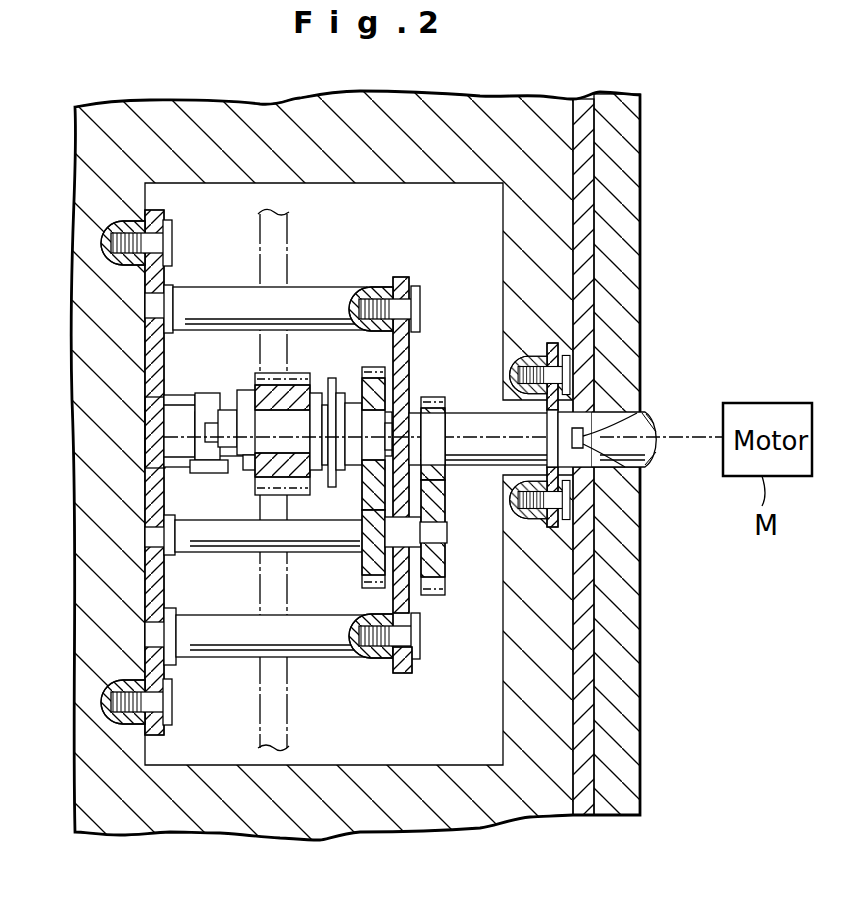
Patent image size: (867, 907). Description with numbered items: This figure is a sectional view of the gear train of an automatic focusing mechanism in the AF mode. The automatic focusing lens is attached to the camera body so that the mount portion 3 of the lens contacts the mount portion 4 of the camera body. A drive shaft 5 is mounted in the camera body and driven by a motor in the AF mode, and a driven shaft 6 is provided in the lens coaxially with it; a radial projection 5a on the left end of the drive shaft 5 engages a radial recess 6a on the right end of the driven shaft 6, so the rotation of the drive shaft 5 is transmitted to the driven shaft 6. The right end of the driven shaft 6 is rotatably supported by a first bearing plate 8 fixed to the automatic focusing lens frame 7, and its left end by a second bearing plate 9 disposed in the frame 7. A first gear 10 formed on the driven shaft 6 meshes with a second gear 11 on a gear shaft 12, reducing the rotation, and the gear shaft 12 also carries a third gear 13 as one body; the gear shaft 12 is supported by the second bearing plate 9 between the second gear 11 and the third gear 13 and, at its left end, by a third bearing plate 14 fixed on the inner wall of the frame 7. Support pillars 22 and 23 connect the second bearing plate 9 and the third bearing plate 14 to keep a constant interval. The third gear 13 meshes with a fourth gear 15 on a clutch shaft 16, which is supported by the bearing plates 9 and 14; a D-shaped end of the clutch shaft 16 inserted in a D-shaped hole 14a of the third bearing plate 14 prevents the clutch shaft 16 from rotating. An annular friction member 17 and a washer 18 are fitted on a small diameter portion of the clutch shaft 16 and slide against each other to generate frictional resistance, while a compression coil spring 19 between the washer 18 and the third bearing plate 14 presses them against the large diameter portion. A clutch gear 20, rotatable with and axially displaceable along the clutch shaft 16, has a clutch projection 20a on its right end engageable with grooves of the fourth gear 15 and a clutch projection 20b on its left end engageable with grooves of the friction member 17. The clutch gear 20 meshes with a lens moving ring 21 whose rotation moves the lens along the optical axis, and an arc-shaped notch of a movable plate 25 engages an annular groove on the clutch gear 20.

The mount portion 3 is at (587, 807).
The mount portion 4 is at (624, 768).
The drive shaft 5 is at (650, 465).
The projection 5a is at (585, 440).
The driven shaft 6 is at (476, 426).
The recess 6a is at (594, 468).
The automatic focusing lens frame 7 is at (532, 805).
The first bearing plate 8 is at (562, 522).
The second bearing plate 9 is at (413, 663).
The first gear 10 is at (440, 396).
The second gear 11 is at (446, 556).
The gear shaft 12 is at (322, 540).
The third gear 13 is at (365, 558).
The third bearing plate 14 is at (158, 727).
The hole 14a is at (148, 440).
The fourth gear 15 is at (409, 372).
The clutch shaft 16 is at (242, 405).
The friction member 17 is at (210, 473).
The washer 18 is at (198, 395).
The compression coil spring 19 is at (150, 482).
The clutch gear 20 is at (293, 375).
The clutch projection 20a is at (350, 463).
The clutch projection 20b is at (238, 465).
The lens moving ring 21 is at (281, 712).
The support pillar 22 is at (322, 300).
The support pillar 23 is at (357, 645).
The movable plate 25 is at (348, 382).